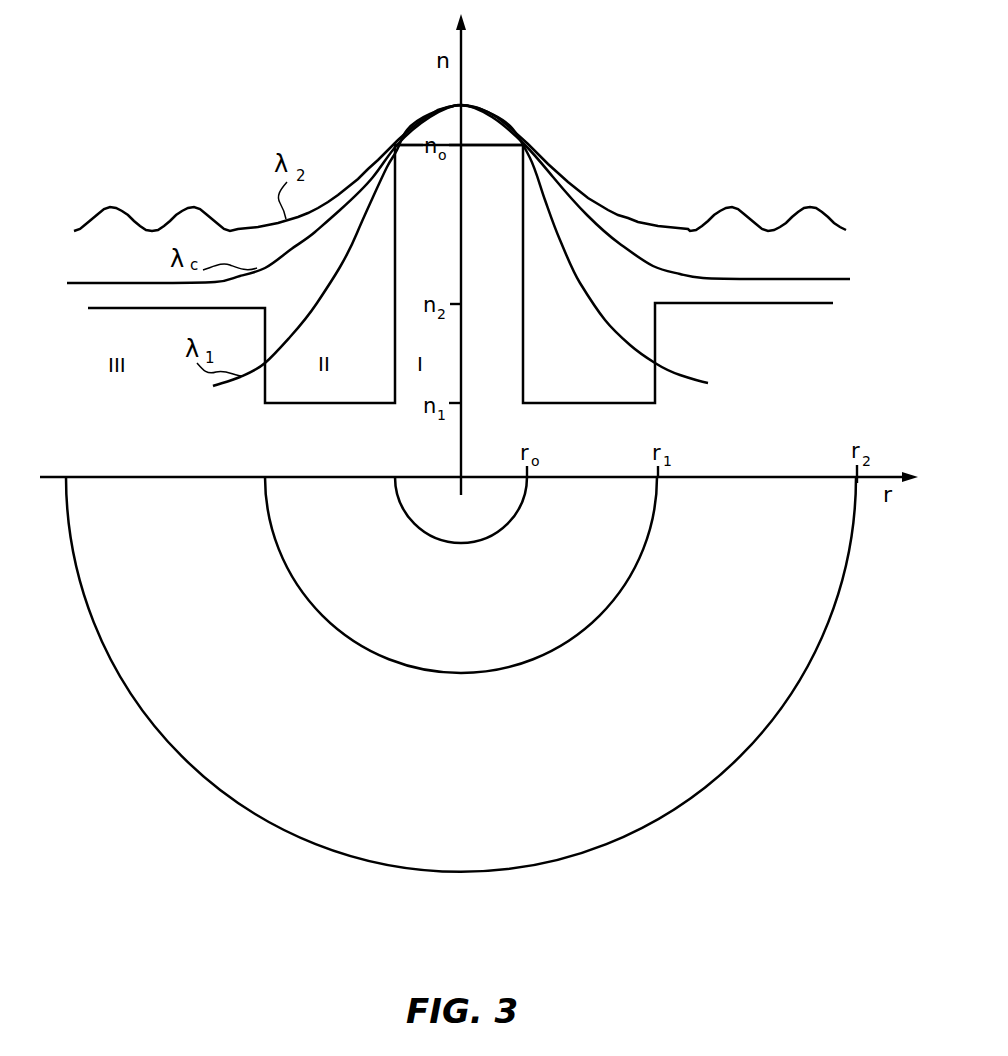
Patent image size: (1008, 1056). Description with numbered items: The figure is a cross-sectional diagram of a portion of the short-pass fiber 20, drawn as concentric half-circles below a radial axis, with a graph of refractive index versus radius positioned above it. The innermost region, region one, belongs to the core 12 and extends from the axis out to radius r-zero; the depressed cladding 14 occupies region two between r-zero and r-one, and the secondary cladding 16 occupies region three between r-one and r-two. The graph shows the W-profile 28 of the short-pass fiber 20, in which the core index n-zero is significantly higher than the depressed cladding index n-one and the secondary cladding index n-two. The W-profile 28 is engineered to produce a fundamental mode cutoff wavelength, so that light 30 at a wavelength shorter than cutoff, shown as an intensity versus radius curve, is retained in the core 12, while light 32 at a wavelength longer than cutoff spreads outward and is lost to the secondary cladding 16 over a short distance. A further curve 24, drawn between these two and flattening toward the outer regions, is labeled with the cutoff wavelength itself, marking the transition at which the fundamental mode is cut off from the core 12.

The core 12 is at (422, 530).
The depressed cladding 14 is at (523, 662).
The secondary cladding 16 is at (707, 787).
The short-pass fiber 20 is at (461, 674).
The mode field distribution at cutoff wavelength 24 is at (680, 272).
The W-profile 28 is at (378, 275).
The light 30 is at (588, 293).
The light 32 is at (700, 221).